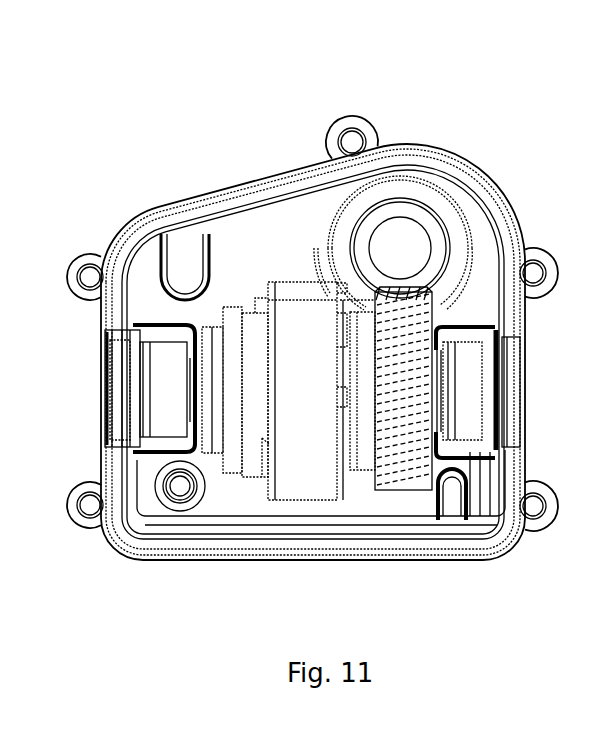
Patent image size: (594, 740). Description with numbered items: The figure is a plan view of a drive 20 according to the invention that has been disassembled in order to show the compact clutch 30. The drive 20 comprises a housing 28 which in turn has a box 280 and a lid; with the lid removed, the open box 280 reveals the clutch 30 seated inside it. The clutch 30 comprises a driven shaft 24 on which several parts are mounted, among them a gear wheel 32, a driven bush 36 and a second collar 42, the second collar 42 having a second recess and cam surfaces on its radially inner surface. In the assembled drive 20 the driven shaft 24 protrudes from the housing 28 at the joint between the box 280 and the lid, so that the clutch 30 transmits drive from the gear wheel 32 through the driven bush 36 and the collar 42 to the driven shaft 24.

The drive 20 is at (176, 76).
The driven shaft 24 is at (107, 397).
The housing 28 is at (196, 197).
The box 280 is at (511, 187).
The clutch 30 is at (318, 504).
The gear wheel 32 is at (408, 448).
The driven bush 36 is at (233, 460).
The second collar 42 is at (300, 298).